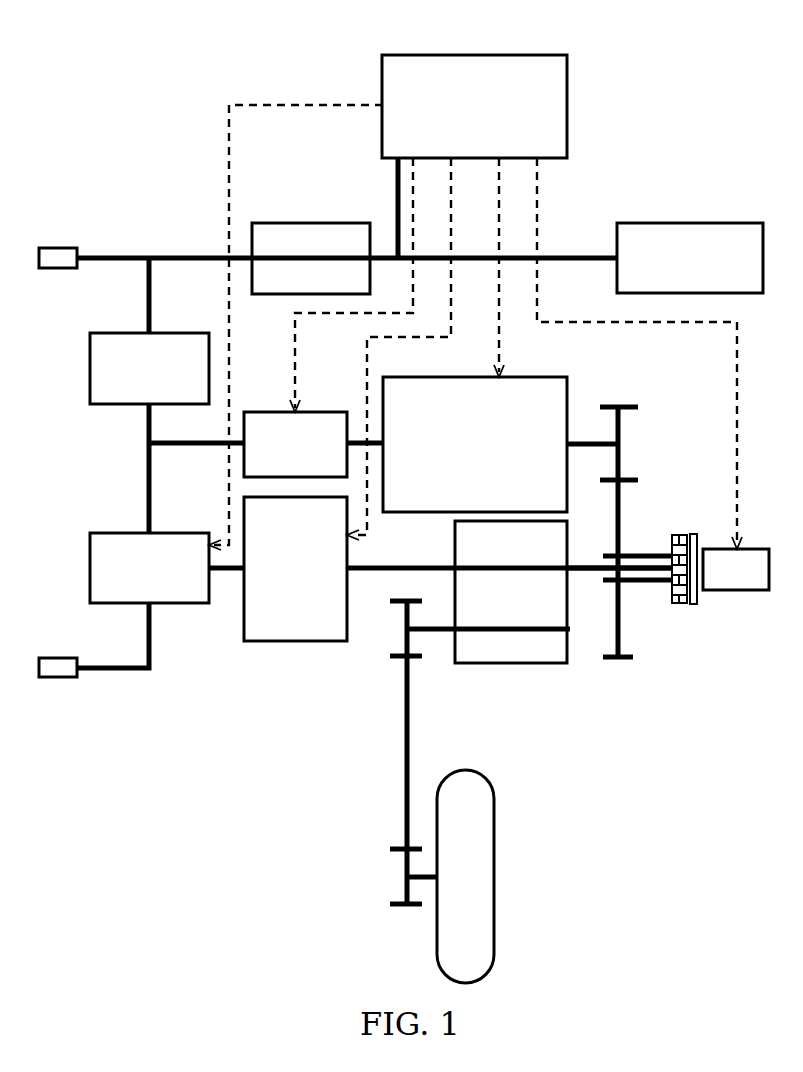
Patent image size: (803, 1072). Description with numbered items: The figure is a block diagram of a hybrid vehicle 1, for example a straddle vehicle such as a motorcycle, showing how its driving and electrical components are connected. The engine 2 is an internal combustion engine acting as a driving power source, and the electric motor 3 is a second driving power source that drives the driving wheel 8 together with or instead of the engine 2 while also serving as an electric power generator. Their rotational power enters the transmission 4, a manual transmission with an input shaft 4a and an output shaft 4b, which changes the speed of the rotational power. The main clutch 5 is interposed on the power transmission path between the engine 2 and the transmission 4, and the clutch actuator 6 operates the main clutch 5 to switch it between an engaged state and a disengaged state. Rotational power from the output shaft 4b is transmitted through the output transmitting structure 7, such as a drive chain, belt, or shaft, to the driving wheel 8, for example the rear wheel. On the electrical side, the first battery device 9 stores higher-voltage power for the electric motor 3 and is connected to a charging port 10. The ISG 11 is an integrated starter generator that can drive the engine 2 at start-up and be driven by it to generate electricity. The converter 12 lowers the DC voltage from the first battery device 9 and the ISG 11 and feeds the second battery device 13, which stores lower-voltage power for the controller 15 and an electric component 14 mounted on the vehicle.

The hybrid vehicle 1 is at (394, 499).
The engine 2 is at (567, 385).
The electric motor 3 is at (305, 641).
The transmission 4 is at (495, 663).
The input shaft 4a is at (587, 570).
The output shaft 4b is at (540, 629).
The main clutch 5 is at (692, 605).
The clutch actuator 6 is at (750, 590).
The output transmitting structure 7 is at (407, 765).
The driving wheel 8 is at (494, 852).
The first battery device 9 is at (90, 553).
The charging port 10 is at (60, 678).
The ISG 11 is at (262, 412).
The converter 12 is at (90, 353).
The second battery device 13 is at (280, 223).
The electric component 14 is at (720, 223).
The controller 15 is at (567, 87).